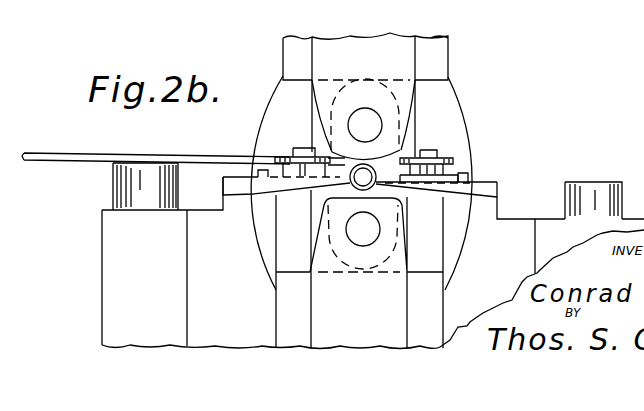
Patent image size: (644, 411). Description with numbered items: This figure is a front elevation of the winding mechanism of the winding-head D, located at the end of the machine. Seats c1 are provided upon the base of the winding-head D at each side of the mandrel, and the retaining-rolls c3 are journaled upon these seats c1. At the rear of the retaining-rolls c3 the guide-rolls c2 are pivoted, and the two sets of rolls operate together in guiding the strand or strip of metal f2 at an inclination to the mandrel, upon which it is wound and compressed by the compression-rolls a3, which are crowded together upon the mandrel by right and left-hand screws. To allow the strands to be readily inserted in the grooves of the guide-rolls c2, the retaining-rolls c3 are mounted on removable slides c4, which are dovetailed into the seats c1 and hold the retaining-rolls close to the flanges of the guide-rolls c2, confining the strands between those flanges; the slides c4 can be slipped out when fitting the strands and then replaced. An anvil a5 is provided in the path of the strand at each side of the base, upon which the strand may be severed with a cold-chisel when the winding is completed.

The compression-rolls a3 is at (347, 98).
The anvil a5 is at (104, 186).
The strand or strip of metal f2 is at (91, 153).
The seats c1 is at (517, 151).
The guide-rolls c2 is at (450, 158).
The retaining-rolls c3 is at (298, 163).
The removable slides c4 is at (518, 141).
The winding-head D is at (361, 252).